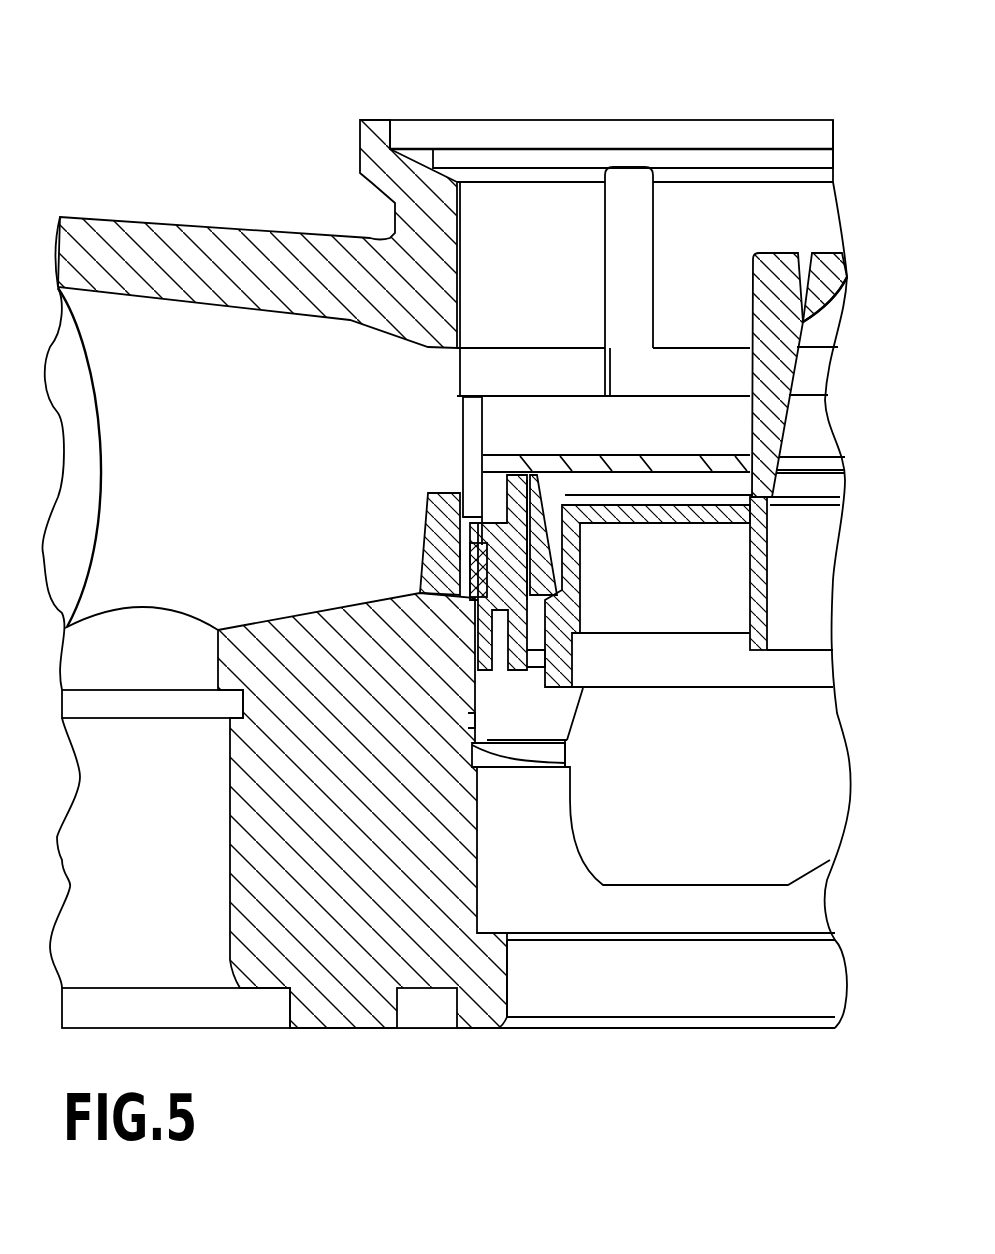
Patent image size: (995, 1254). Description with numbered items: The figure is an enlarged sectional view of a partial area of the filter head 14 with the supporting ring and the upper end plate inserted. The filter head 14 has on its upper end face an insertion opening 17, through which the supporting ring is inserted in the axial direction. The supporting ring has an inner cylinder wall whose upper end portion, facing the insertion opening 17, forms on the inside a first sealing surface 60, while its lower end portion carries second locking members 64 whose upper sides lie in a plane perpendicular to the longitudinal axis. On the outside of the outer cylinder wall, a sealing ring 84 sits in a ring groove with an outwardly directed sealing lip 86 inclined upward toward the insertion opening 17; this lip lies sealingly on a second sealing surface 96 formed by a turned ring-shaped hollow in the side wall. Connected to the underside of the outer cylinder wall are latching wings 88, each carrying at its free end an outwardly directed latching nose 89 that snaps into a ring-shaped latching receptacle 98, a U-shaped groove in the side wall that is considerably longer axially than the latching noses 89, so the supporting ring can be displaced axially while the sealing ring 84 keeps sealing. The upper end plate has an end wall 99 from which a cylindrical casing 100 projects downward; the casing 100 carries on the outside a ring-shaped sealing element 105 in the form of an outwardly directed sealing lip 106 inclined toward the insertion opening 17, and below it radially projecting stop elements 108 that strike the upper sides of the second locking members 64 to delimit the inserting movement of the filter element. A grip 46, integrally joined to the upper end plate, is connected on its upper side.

The filter head 14 is at (373, 117).
The insertion opening 17 is at (457, 177).
The grip 46 is at (847, 267).
The first sealing surface 60 is at (650, 463).
The second locking member 64 is at (573, 647).
The sealing ring 84 is at (460, 510).
The sealing lip 86 is at (435, 493).
The latching wing 88 is at (537, 720).
The latching nose 89 is at (475, 728).
The second sealing surface 96 is at (445, 600).
The latching receptacle 98 is at (573, 762).
The end wall 99 is at (618, 513).
The casing 100 is at (577, 595).
The sealing element 105 is at (545, 512).
The sealing lip 106 is at (533, 485).
The stop element 108 is at (457, 561).